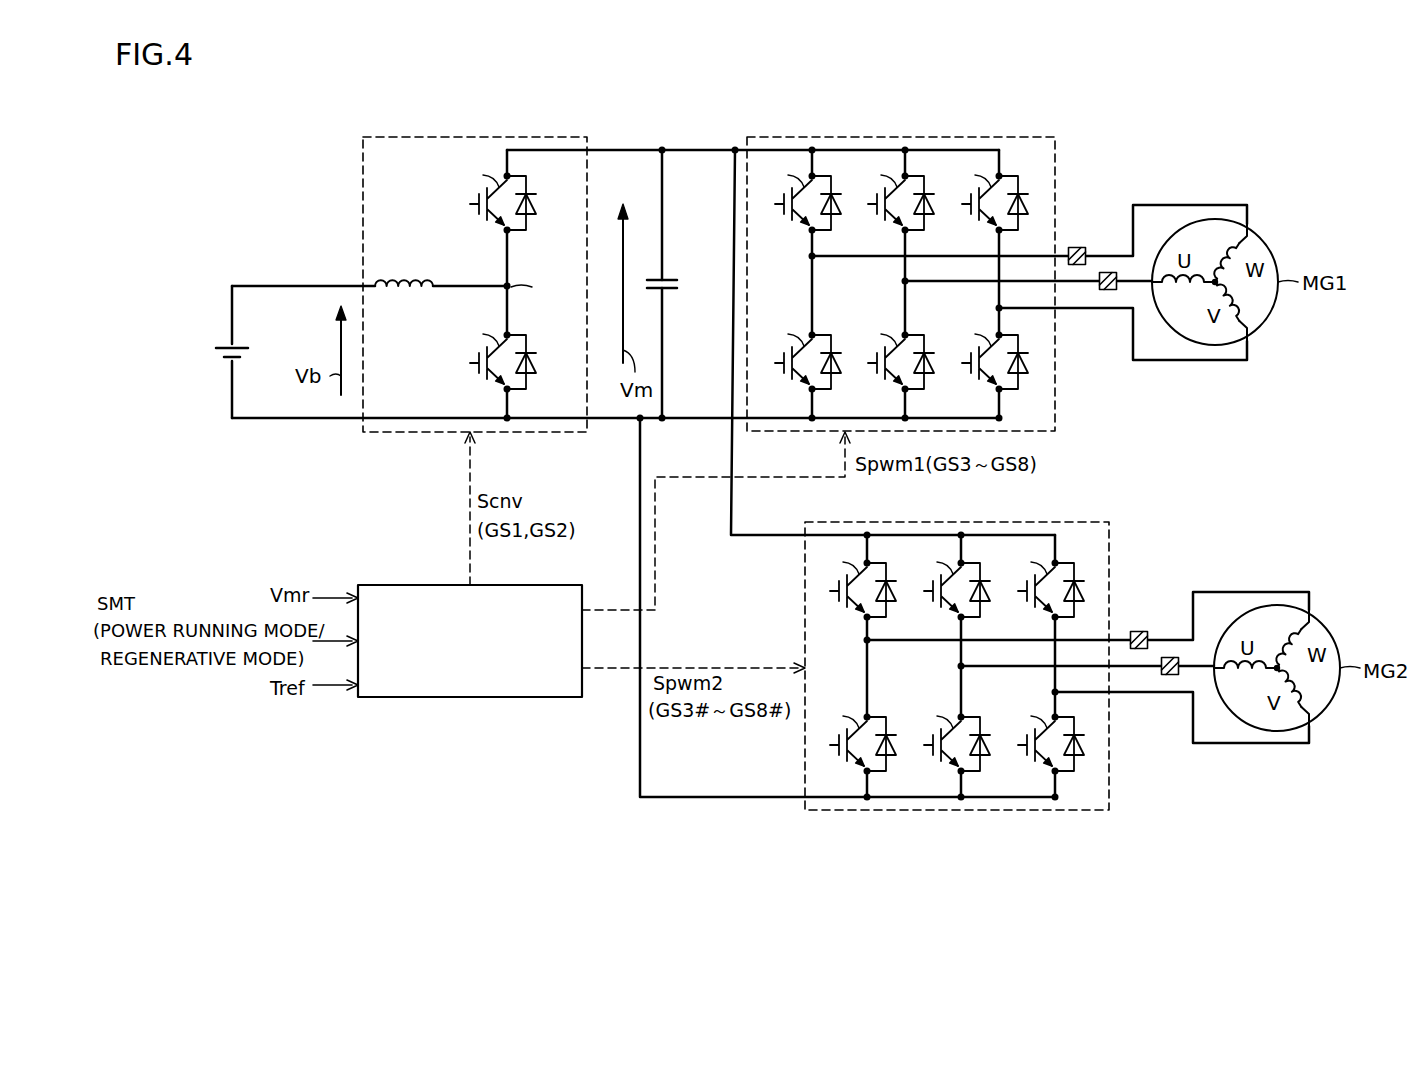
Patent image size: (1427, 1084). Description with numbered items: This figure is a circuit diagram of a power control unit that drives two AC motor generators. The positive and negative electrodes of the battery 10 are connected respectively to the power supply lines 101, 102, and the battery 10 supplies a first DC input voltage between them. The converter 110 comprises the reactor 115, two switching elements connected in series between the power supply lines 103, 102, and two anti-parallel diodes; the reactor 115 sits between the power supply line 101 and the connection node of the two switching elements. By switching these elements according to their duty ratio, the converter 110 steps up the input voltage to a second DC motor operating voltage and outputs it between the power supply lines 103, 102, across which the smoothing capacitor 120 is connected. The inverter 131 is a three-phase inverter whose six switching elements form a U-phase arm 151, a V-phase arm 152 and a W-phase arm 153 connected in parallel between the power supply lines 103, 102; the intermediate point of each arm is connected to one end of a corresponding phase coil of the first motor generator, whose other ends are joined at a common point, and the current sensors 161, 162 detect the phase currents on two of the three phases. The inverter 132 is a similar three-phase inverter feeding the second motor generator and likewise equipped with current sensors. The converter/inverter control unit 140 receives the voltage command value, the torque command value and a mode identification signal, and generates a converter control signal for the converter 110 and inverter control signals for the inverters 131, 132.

The battery 10 is at (248, 348).
The power supply line 101 is at (338, 285).
The power supply line 102 is at (688, 420).
The power supply line 103 is at (692, 150).
The converter 110 is at (401, 137).
The reactor 115 is at (409, 286).
The smoothing capacitor 120 is at (677, 283).
The inverter 131 is at (1008, 137).
The inverter 132 is at (1073, 522).
The converter/inverter control unit 140 is at (468, 697).
The U-phase arm 151 is at (800, 267).
The V-phase arm 152 is at (892, 292).
The W-phase arm 153 is at (985, 318).
The current sensor 161 is at (1077, 265).
The current sensor 162 is at (1108, 290).